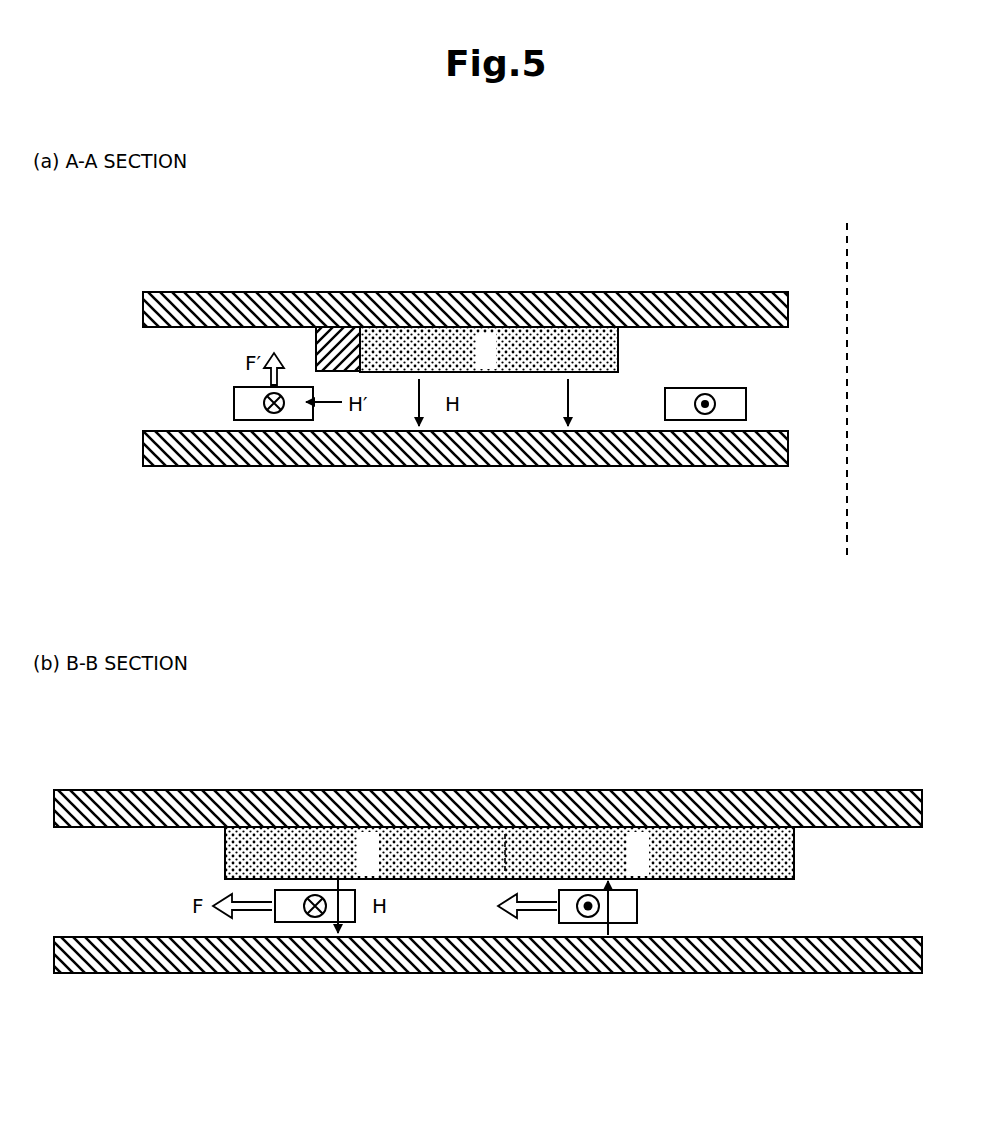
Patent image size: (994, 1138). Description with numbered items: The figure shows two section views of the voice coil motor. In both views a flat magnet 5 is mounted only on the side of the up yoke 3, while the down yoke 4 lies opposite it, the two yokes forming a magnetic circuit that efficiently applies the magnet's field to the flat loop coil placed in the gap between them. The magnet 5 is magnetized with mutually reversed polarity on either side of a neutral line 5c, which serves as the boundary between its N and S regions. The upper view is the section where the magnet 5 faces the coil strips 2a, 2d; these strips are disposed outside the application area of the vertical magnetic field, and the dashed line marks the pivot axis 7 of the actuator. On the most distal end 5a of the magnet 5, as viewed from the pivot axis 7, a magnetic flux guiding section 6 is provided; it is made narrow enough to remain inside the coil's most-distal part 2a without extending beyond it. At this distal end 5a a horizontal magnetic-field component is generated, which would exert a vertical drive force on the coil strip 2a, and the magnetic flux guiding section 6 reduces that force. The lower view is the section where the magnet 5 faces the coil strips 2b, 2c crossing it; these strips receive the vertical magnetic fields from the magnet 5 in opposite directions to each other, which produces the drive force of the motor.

The up yoke 3 is at (211, 302).
The down yoke 4 is at (216, 452).
The magnet 5 is at (553, 349).
The most-distal end of the magnet 5a is at (372, 349).
The neutral line 5c is at (505, 840).
The magnetic flux guiding section 6 is at (333, 341).
The pivot axis 7 is at (848, 282).
The coil strip 2a is at (233, 396).
The coil strip 2b is at (296, 922).
The coil strip 2c is at (640, 904).
The coil strip 2d is at (747, 400).